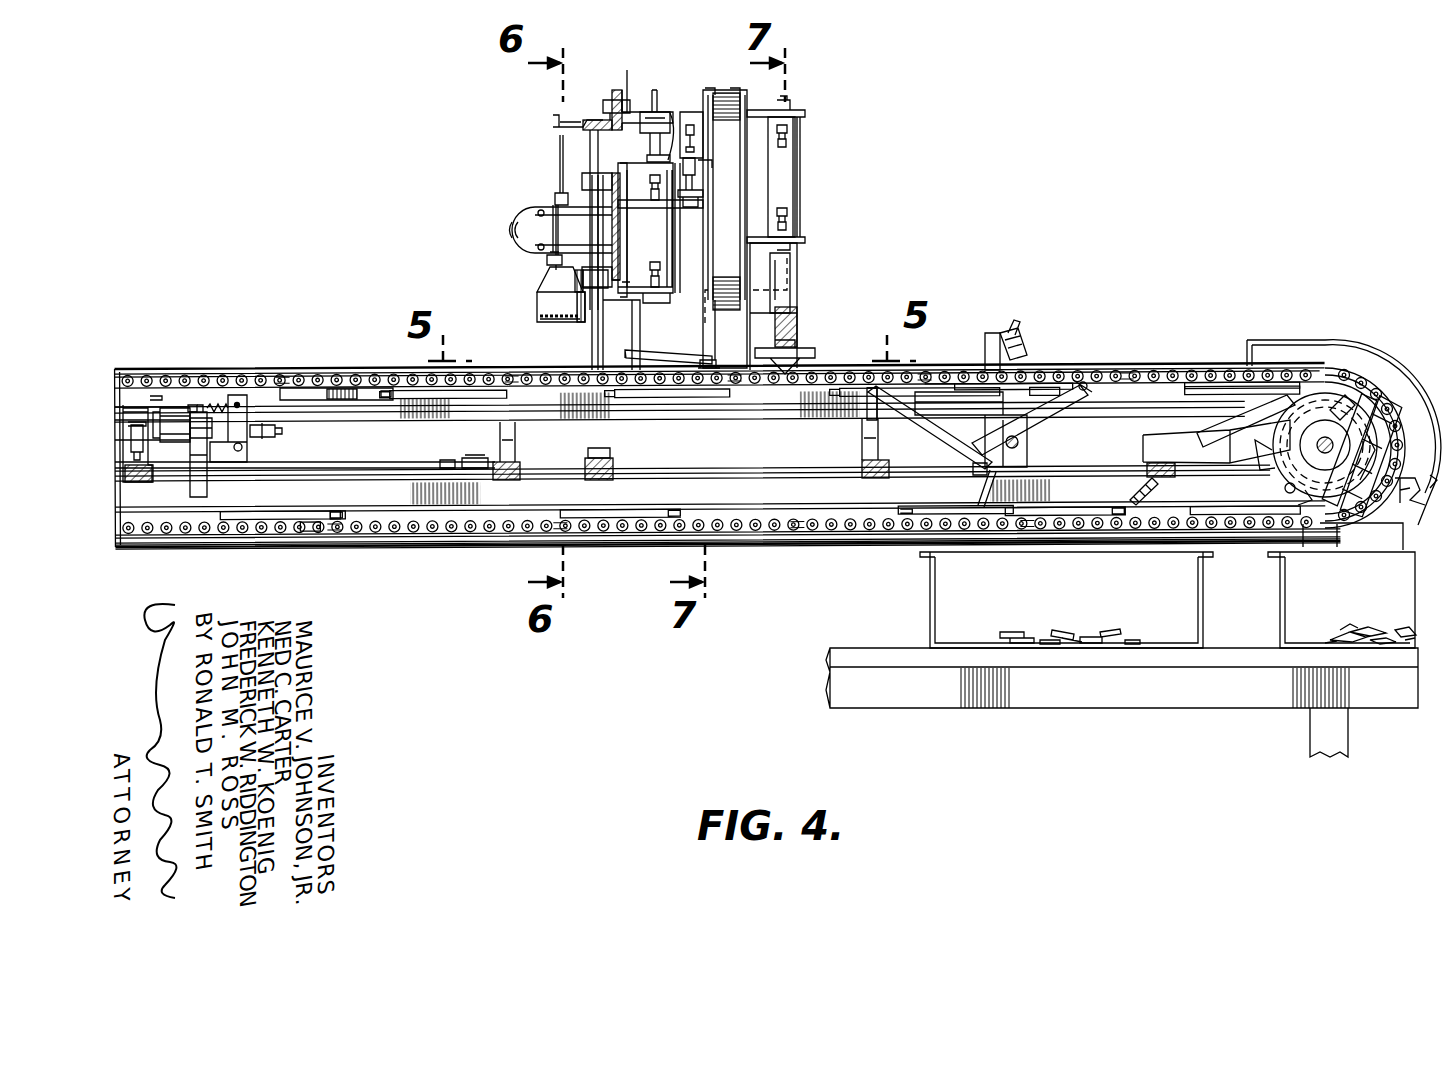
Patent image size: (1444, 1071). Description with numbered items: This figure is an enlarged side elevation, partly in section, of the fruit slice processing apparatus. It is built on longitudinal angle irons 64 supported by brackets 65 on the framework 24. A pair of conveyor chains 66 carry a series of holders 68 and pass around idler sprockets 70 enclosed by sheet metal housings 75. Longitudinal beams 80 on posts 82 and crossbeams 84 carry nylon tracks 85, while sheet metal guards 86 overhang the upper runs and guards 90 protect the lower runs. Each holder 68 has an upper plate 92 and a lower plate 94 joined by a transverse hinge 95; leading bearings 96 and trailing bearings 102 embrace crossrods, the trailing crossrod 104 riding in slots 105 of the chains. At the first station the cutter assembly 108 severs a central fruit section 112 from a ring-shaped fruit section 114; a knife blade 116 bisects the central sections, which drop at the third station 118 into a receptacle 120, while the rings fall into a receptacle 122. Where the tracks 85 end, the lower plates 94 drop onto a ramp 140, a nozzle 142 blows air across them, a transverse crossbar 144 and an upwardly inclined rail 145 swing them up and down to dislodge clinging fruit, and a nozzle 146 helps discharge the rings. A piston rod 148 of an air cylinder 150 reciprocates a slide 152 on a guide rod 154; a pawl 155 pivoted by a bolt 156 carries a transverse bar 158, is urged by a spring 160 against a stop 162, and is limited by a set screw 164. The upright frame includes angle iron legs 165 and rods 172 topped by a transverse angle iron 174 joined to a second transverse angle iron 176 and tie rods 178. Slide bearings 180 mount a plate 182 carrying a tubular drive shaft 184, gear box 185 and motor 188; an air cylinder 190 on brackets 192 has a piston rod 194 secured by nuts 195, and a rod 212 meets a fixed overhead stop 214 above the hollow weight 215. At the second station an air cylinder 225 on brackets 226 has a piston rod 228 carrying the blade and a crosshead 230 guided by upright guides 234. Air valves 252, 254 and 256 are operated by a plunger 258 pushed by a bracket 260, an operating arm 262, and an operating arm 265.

The framework 24 is at (1196, 706).
The longitudinal angle irons 64 is at (838, 512).
The brackets 65 is at (1325, 540).
The conveyor chains 66 is at (192, 376).
The holders 68 is at (375, 410).
The idler sprockets 70 is at (1262, 485).
The sheet metal housings 75 is at (1270, 342).
The longitudinal beams 80 is at (655, 400).
The posts 82 is at (515, 462).
The crossbeams 84 is at (614, 466).
The nylon tracks 85 is at (864, 408).
The longitudinal sheet metal guards 86 is at (370, 393).
The sheet metal guards 90 is at (485, 543).
The upper plate 92 is at (975, 388).
The lower plate 94 is at (1085, 398).
The transverse hinge 95 is at (1085, 382).
The bearings 96 is at (1296, 373).
The bearings 102 is at (940, 390).
The crossrod 104 is at (340, 525).
The slots 105 is at (318, 540).
The cutter assembly 108 is at (536, 297).
The central fruit section 112 is at (978, 420).
The ring-shaped fruit section 114 is at (1350, 628).
The knife blade 116 is at (800, 350).
The third station 118 is at (1045, 357).
The receptacle 120 is at (930, 596).
The receptacle 122 is at (1280, 612).
The ramp 140 is at (937, 443).
The nozzle 142 is at (1020, 333).
The transverse crossbar 144 is at (1020, 442).
The upwardly inclined rail 145 is at (1160, 462).
The nozzle 146 is at (1390, 482).
The piston rod 148 is at (192, 418).
The air cylinder 150 is at (125, 413).
The slide 152 is at (200, 455).
The guide rod 154 is at (328, 470).
The pawl 155 is at (238, 404).
The bolt 156 is at (243, 447).
The transverse bar 158 is at (235, 412).
The spring 160 is at (216, 415).
The stop 162 is at (222, 437).
The set screw 164 is at (282, 431).
The angle iron legs 165 is at (732, 180).
The rods 172 is at (591, 348).
The transverse angle iron 174 is at (612, 90).
The second transverse angle iron 176 is at (625, 88).
The tie rods 178 is at (667, 112).
The slide bearings 180 is at (584, 178).
The plate 182 is at (612, 243).
The tubular drive shaft 184 is at (546, 260).
The gear box 185 is at (533, 222).
The motor 188 is at (516, 230).
The air cylinder 190 is at (655, 230).
The brackets 192 is at (625, 152).
The piston rod 194 is at (648, 110).
The nuts 195 is at (688, 118).
The rod 212 is at (557, 141).
The fixed overhead stop 214 is at (553, 115).
The hollow weight 215 is at (538, 318).
The air cylinder 225 is at (797, 138).
The brackets 226 is at (798, 111).
The piston rod 228 is at (800, 258).
The crosshead 230 is at (797, 312).
The upright guides 234 is at (790, 282).
The normally closed air valve 252 is at (690, 112).
The normally closed air valve 254 is at (695, 358).
The normally closed air valve 256 is at (478, 457).
The operating plunger 258 is at (770, 160).
The bracket 260 is at (720, 206).
The operating arm 262 is at (668, 352).
The operating arm 265 is at (447, 466).